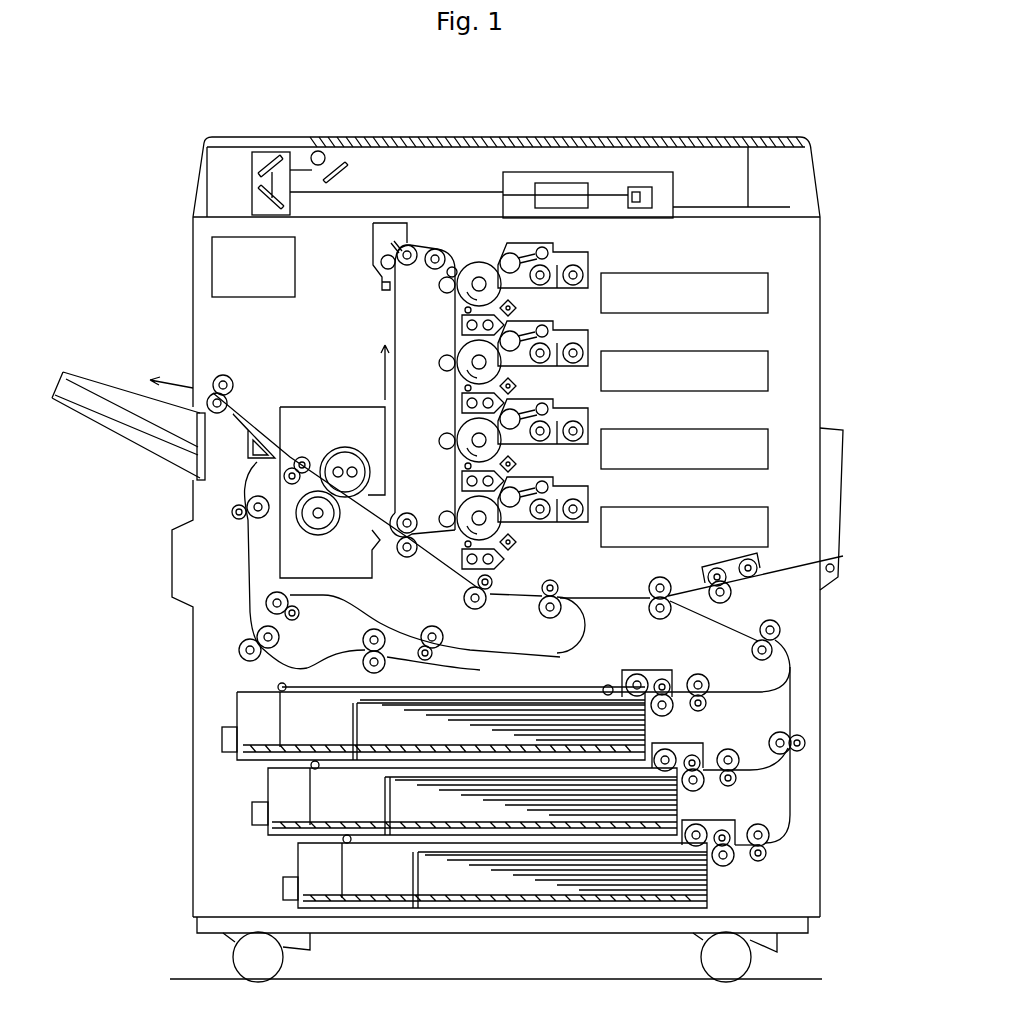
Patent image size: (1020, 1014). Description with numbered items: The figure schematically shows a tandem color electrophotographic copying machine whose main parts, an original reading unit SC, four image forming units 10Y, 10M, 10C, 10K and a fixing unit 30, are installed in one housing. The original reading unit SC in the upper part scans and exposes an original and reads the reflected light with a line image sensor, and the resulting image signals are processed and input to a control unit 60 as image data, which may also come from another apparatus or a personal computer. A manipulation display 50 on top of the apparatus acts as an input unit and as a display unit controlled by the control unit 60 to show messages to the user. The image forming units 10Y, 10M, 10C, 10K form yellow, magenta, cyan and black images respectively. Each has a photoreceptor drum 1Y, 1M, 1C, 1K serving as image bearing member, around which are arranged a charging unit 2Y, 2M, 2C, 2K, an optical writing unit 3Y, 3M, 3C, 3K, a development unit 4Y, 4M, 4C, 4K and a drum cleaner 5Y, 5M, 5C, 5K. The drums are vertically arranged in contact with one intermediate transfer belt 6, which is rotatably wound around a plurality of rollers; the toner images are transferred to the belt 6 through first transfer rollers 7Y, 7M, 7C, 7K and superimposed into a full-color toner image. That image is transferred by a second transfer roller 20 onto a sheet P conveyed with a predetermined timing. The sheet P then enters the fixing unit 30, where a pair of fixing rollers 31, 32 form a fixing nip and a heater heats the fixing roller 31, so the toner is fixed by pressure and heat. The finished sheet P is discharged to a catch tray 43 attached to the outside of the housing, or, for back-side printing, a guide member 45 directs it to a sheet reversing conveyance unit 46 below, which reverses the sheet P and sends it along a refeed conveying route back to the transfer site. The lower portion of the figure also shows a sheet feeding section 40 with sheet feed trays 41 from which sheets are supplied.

The photoreceptor drum 1Y is at (466, 266).
The photoreceptor drum 1M is at (461, 350).
The photoreceptor drum 1C is at (461, 428).
The photoreceptor drum 1K is at (461, 506).
The charging unit 2Y is at (518, 309).
The charging unit 2M is at (518, 387).
The charging unit 2C is at (518, 465).
The charging unit 2K is at (518, 543).
The optical writing unit 3Y is at (770, 290).
The optical writing unit 3M is at (770, 368).
The optical writing unit 3C is at (770, 446).
The optical writing unit 3K is at (770, 524).
The development unit 4Y is at (565, 243).
The development unit 4M is at (570, 321).
The development unit 4C is at (570, 399).
The development unit 4K is at (570, 477).
The drum cleaner 5Y is at (462, 322).
The drum cleaner 5M is at (462, 399).
The drum cleaner 5C is at (462, 477).
The drum cleaner 5K is at (504, 563).
The intermediate transfer belt 6 is at (393, 330).
The first transfer roller 7Y is at (440, 287).
The first transfer roller 7M is at (440, 365).
The first transfer roller 7C is at (440, 442).
The first transfer roller 7K is at (440, 518).
The image forming unit 10Y is at (558, 280).
The image forming unit 10M is at (564, 360).
The image forming unit 10C is at (560, 438).
The image forming unit 10K is at (558, 527).
The second transfer roller 20 is at (407, 557).
The fixing unit 30 is at (332, 469).
The fixing roller 31 is at (352, 447).
The fixing roller 32 is at (318, 536).
The sheet feeding section 40 is at (465, 786).
The sheet feed tray 41 is at (237, 706).
The catch tray 43 is at (94, 373).
The guide member 45 is at (257, 430).
The sheet reversing conveyance unit 46 is at (229, 590).
The manipulation display 50 is at (712, 205).
The control unit 60 is at (263, 290).
The original reading unit SC is at (745, 194).
The sheet P is at (581, 694).